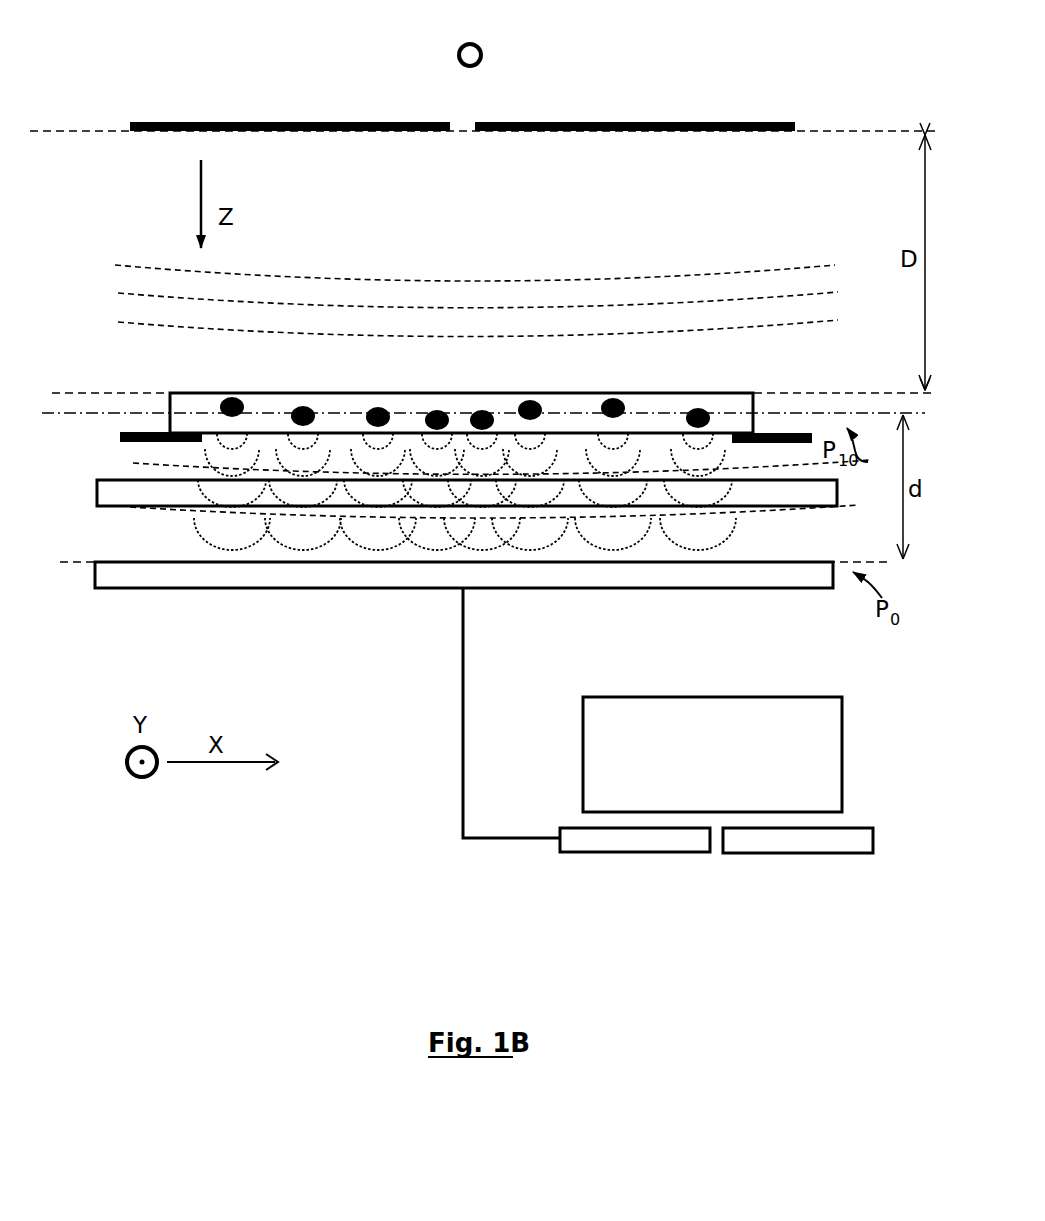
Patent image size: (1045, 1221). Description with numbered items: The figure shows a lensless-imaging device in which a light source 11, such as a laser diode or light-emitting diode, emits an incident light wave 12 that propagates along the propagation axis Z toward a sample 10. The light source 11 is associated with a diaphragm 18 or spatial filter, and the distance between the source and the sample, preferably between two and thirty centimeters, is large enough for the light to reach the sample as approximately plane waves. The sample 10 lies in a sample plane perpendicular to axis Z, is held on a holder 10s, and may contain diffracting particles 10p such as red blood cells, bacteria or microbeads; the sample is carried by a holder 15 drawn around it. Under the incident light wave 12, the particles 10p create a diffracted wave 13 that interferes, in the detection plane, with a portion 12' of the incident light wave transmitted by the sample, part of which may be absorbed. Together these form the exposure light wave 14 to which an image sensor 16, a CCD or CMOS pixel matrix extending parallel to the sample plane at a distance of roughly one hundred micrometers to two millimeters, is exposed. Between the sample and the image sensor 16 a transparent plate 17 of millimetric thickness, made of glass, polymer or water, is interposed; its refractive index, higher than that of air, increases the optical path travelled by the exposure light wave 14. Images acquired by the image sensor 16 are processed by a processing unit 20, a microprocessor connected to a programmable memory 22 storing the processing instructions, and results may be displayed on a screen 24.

The sample 10 is at (398, 389).
The particles 10p is at (465, 392).
The holder 10s is at (150, 450).
The light source 11 is at (457, 52).
The incident light wave 12 is at (443, 297).
The transmitted portion of the incident light wave 12' is at (465, 537).
The diffracted wave 13 is at (252, 550).
The exposure light wave 14 is at (500, 562).
The sample holder 15 is at (766, 409).
The image sensor 16 is at (808, 584).
The plate 17 is at (824, 500).
The diaphragm 18 is at (800, 130).
The processing unit 20 is at (631, 850).
The programmable memory 22 is at (774, 850).
The screen 24 is at (828, 735).